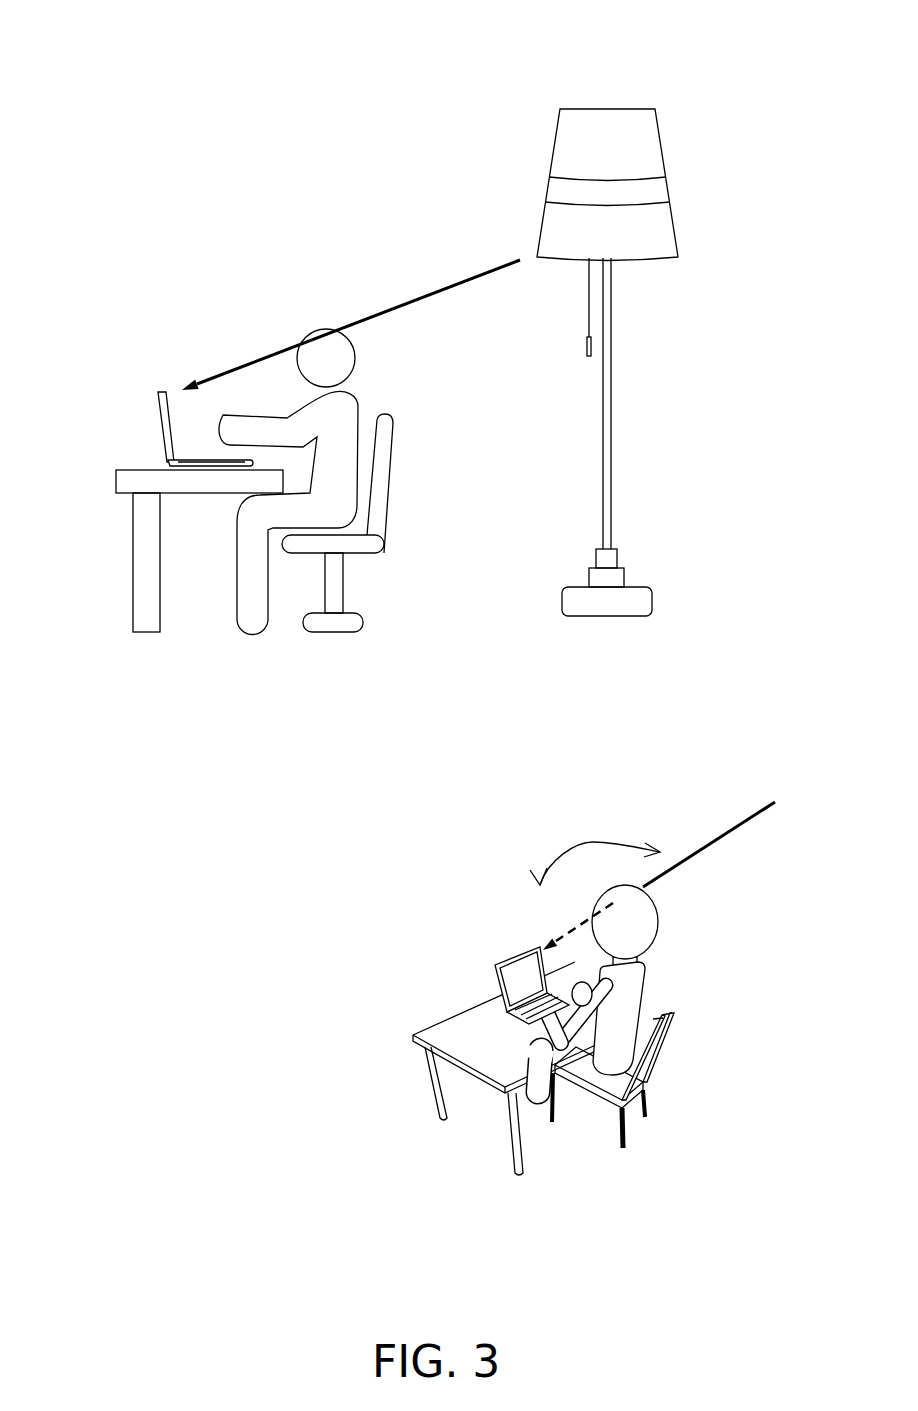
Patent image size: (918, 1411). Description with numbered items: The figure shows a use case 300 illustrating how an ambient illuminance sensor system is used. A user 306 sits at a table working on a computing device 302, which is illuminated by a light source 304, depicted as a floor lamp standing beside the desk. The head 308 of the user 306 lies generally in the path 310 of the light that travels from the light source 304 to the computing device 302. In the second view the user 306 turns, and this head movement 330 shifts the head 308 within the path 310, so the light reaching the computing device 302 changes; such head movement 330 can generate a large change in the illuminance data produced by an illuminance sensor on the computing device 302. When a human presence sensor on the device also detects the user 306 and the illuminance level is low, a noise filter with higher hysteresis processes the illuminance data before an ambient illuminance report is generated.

The use case 300 is at (137, 72).
The computing device 302 is at (158, 425).
The light source 304 is at (548, 187).
The user 306 is at (228, 680).
The head 308 is at (370, 343).
The path 310 is at (273, 350).
The head movement 330 is at (571, 829).